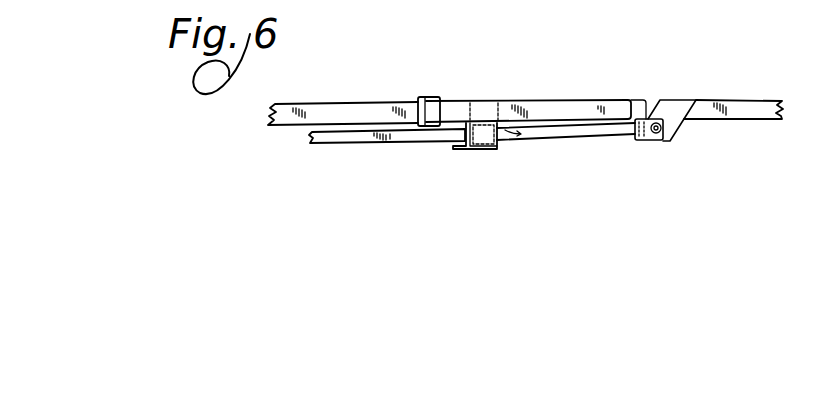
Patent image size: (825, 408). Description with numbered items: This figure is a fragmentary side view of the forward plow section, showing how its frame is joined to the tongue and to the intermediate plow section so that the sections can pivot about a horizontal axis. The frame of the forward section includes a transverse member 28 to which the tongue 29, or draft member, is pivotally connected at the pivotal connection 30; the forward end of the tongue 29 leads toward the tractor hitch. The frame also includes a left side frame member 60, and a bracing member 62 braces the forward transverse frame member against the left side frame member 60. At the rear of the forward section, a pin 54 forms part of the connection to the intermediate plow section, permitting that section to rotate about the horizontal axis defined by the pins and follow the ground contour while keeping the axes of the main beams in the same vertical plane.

The bracing member 62 is at (338, 104).
The left side frame member 60 is at (543, 103).
The tongue 29 is at (357, 143).
The pivotal connection 30 is at (460, 150).
The transverse member 28 is at (523, 146).
The pin 54 is at (658, 140).